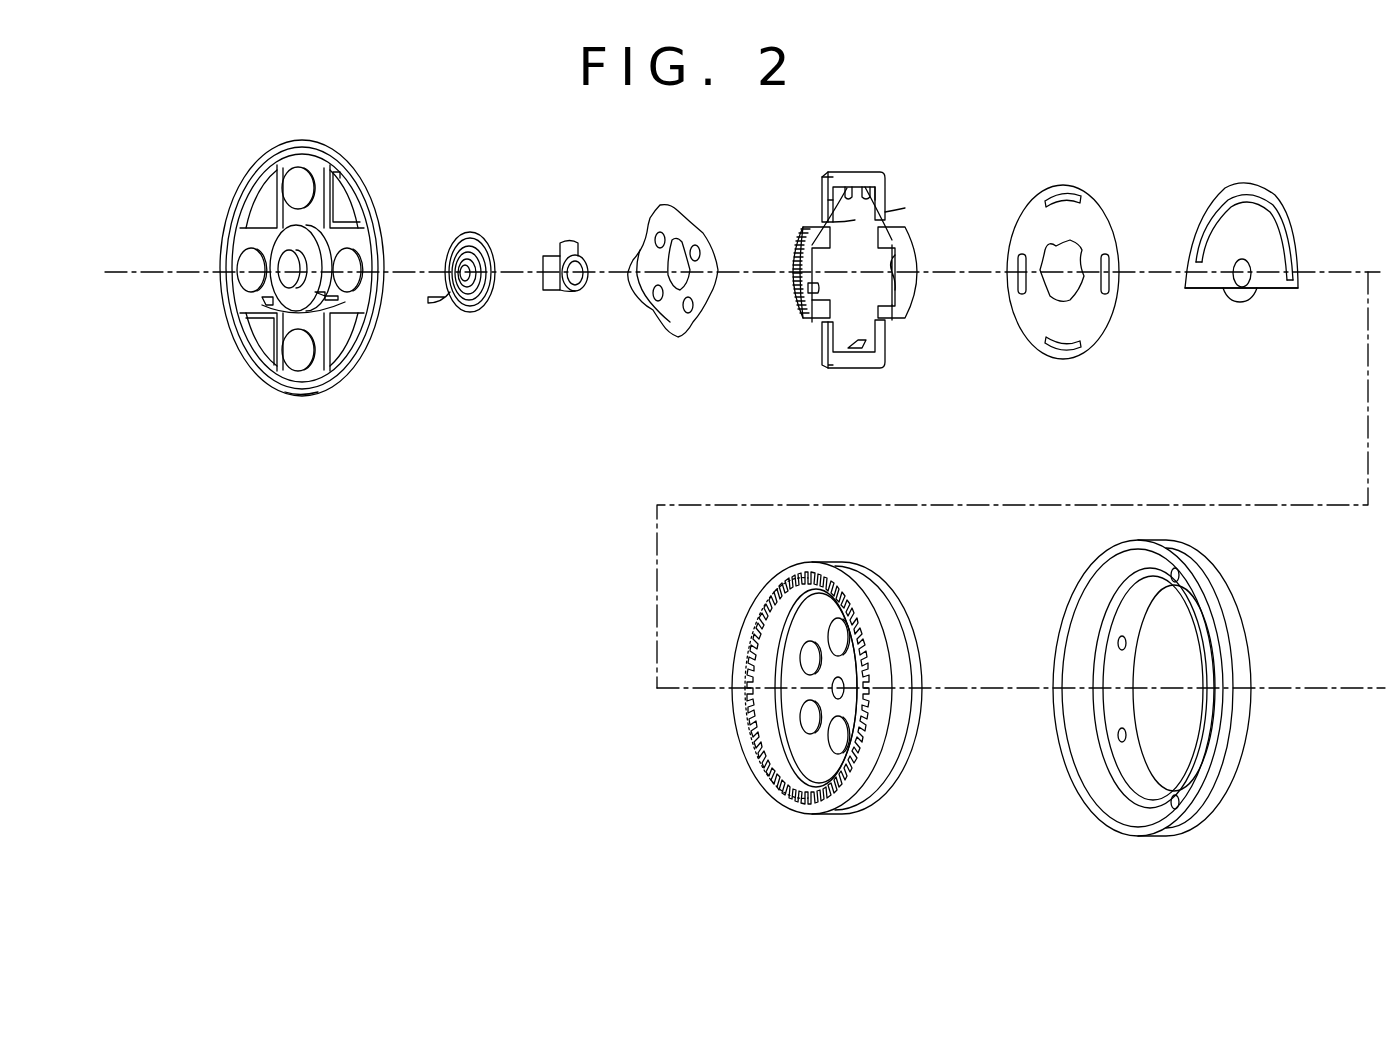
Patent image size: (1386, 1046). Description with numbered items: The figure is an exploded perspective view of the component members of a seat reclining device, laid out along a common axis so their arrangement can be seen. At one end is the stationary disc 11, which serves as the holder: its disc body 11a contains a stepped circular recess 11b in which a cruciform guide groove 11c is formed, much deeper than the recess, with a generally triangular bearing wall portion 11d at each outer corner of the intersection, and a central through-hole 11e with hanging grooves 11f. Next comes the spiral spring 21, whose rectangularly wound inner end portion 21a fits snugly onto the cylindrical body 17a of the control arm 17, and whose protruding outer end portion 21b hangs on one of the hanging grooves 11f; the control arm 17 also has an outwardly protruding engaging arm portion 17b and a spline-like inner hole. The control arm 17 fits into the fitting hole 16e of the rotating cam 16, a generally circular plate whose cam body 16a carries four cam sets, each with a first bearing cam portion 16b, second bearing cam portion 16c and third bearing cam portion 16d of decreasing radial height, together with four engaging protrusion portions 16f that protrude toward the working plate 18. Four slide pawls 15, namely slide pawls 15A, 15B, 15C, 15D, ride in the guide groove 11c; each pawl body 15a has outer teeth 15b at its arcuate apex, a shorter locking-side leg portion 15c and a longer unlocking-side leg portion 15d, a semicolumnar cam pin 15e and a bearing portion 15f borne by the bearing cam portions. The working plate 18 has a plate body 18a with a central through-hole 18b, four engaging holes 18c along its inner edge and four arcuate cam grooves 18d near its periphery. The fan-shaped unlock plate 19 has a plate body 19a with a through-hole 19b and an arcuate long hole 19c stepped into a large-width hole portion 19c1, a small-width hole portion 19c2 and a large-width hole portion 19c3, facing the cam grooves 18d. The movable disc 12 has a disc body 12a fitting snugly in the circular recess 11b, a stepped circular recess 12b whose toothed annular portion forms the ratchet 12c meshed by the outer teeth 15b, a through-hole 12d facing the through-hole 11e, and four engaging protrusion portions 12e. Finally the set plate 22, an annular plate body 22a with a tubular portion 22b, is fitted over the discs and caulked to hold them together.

The stationary disc 11 is at (275, 275).
The disc body 11a is at (243, 356).
The circular recess 11b is at (317, 397).
The guide groove 11c is at (265, 302).
The bearing wall portion 11d is at (345, 200).
The through-hole 11e is at (288, 262).
The hanging groove 11f is at (260, 284).
The spiral spring 21 is at (455, 222).
The inner end portion 21a is at (485, 266).
The outer end portion 21b is at (428, 298).
The control arm 17 is at (574, 253).
The cylindrical body 17a is at (552, 252).
The engaging arm portion 17b is at (582, 250).
The rotating cam 16 is at (676, 294).
The cam body 16a is at (650, 320).
The first bearing cam portion 16b is at (693, 236).
The second bearing cam portion 16c is at (655, 230).
The third bearing cam portion 16d is at (690, 245).
The fitting hole 16e is at (692, 238).
The engaging protrusion portion 16f is at (690, 308).
The slide pawl 15 is at (860, 265).
The slide pawl 15A is at (874, 136).
The slide pawl 15B is at (775, 335).
The slide pawl 15C is at (850, 372).
The slide pawl 15D is at (898, 316).
The pawl body 15a is at (882, 174).
The outer teeth 15b is at (830, 172).
The leg portion 15c is at (824, 206).
The leg portion 15d is at (888, 213).
The cam pin 15e is at (848, 172).
The bearing portion 15f is at (770, 263).
The working plate 18 is at (1072, 254).
The plate body 18a is at (1092, 214).
The through-hole 18b is at (1058, 310).
The engaging hole 18c is at (1053, 265).
The cam groove 18d is at (1087, 350).
The unlock plate 19 is at (1262, 244).
The plate body 19a is at (1205, 289).
The through-hole 19b is at (1248, 287).
The long hole 19c is at (1262, 184).
The large-width hole portion 19c1 is at (1215, 205).
The small-width hole portion 19c2 is at (1272, 215).
The large-width hole portion 19c3 is at (1252, 291).
The movable disc 12 is at (824, 687).
The disc body 12a is at (762, 773).
The circular recess 12b is at (830, 775).
The ratchet 12c is at (775, 605).
The through-hole 12d is at (845, 686).
The engaging protrusion portion 12e is at (778, 692).
The set plate 22 is at (1145, 687).
The annular plate body 22a is at (1130, 550).
The tubular portion 22b is at (1150, 830).